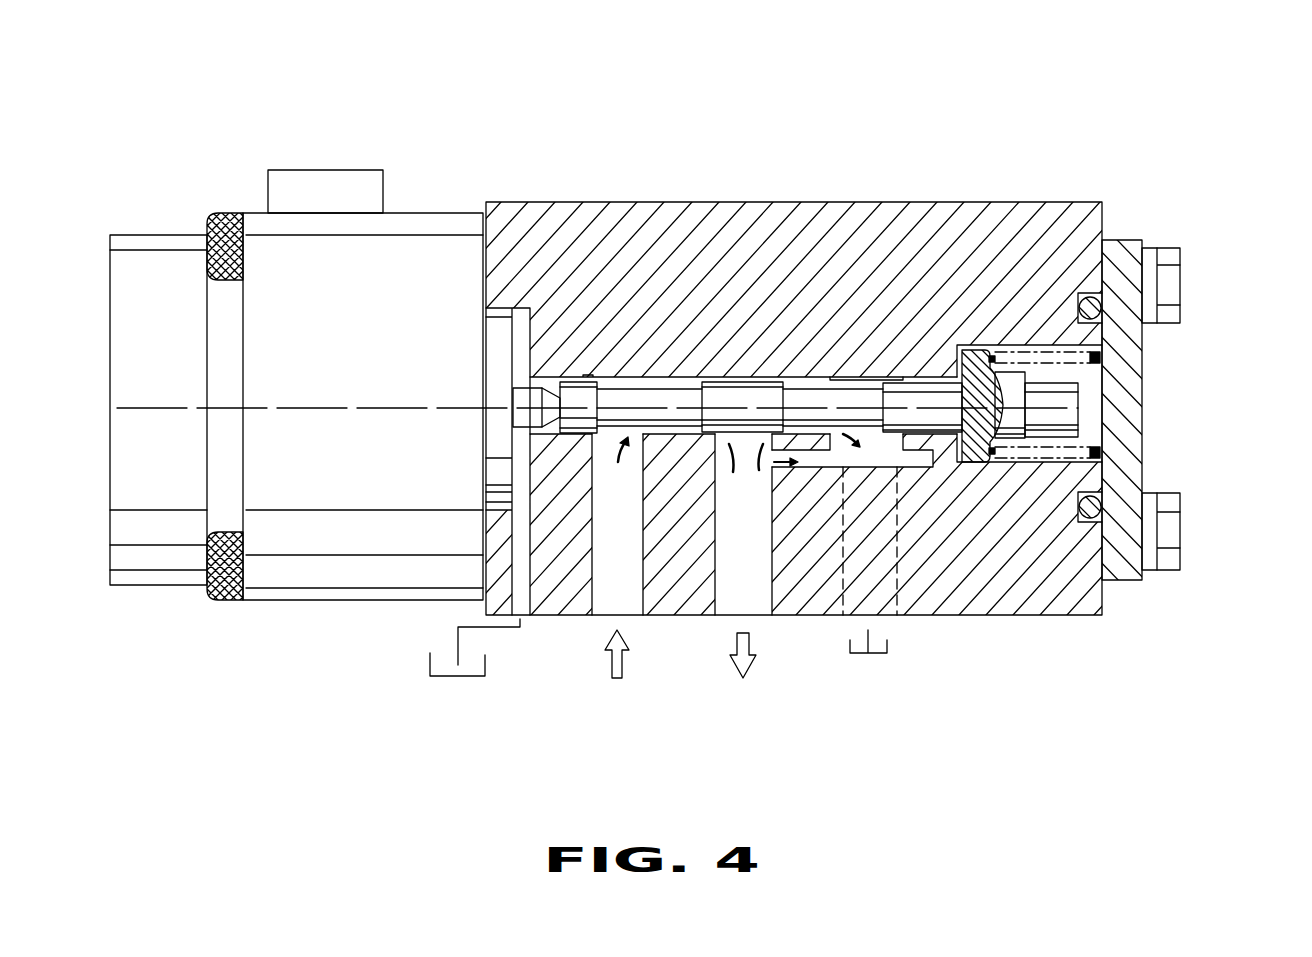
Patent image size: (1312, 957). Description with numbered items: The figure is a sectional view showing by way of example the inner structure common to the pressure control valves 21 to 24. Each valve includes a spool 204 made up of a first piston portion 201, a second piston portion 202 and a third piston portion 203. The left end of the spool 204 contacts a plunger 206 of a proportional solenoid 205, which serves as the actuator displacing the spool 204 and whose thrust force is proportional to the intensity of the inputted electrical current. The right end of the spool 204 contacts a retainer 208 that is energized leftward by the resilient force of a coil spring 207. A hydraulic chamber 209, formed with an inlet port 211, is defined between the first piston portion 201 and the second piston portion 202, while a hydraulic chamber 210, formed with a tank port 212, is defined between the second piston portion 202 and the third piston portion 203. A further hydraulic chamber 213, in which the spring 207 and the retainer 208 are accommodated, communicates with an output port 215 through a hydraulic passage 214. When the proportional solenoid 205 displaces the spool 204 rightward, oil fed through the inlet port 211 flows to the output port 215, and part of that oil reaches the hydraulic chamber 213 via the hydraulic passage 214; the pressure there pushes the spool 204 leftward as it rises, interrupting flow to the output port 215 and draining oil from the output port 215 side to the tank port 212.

The pressure control valve 21 is at (714, 323).
The pressure control valve 24 is at (527, 69).
The first piston portion 201 is at (575, 430).
The second piston portion 202 is at (743, 417).
The third piston portion 203 is at (928, 415).
The spool 204 is at (756, 399).
The proportional solenoid 205 is at (345, 578).
The plunger 206 is at (523, 405).
The coil spring 207 is at (1103, 343).
The retainer 208 is at (1013, 427).
The hydraulic chamber 209 is at (623, 378).
The hydraulic chamber 210 is at (853, 387).
The inlet port 211 is at (605, 597).
The tank port 212 is at (882, 597).
The hydraulic chamber 213 is at (1090, 427).
The hydraulic passage 214 is at (820, 460).
The output port 215 is at (750, 600).